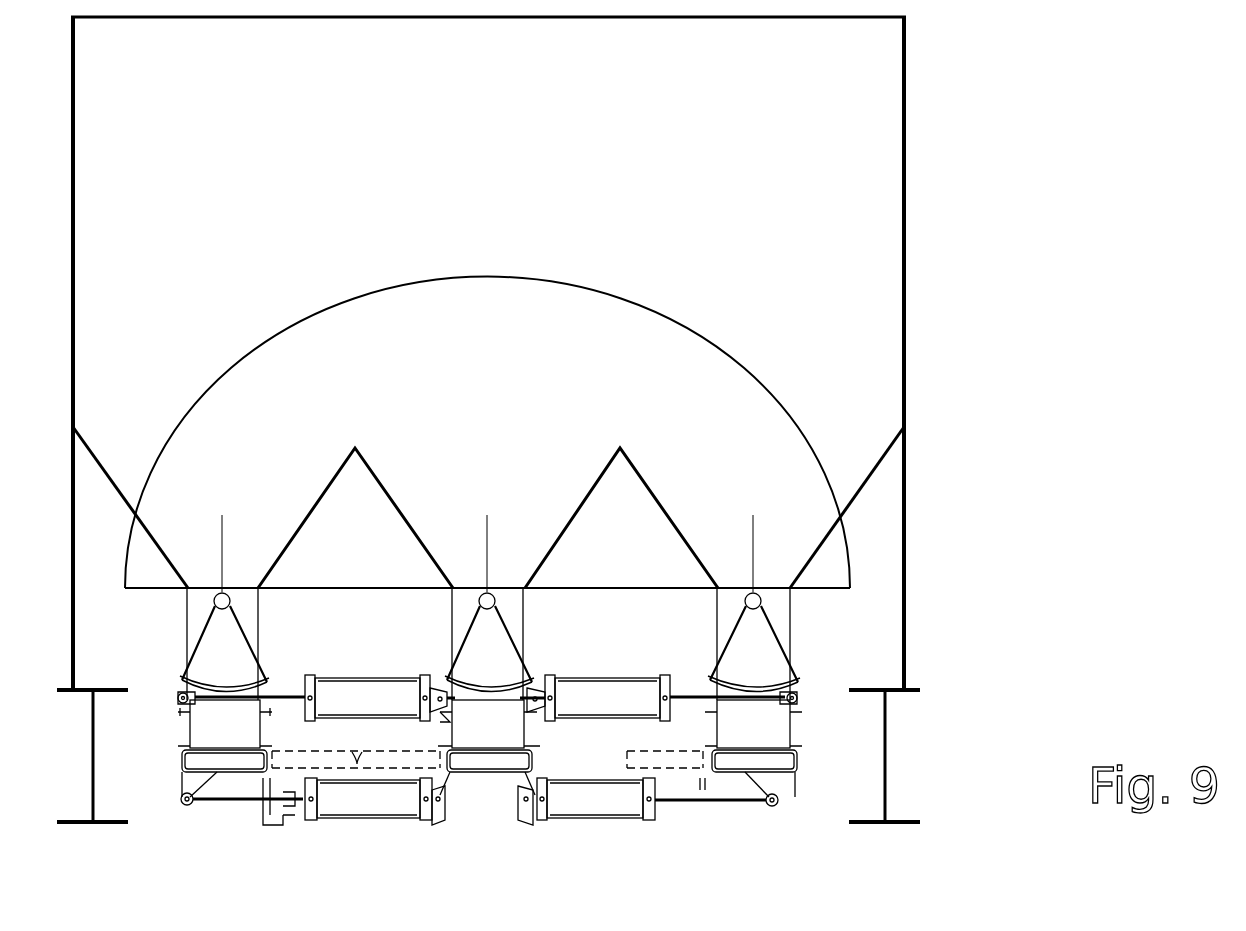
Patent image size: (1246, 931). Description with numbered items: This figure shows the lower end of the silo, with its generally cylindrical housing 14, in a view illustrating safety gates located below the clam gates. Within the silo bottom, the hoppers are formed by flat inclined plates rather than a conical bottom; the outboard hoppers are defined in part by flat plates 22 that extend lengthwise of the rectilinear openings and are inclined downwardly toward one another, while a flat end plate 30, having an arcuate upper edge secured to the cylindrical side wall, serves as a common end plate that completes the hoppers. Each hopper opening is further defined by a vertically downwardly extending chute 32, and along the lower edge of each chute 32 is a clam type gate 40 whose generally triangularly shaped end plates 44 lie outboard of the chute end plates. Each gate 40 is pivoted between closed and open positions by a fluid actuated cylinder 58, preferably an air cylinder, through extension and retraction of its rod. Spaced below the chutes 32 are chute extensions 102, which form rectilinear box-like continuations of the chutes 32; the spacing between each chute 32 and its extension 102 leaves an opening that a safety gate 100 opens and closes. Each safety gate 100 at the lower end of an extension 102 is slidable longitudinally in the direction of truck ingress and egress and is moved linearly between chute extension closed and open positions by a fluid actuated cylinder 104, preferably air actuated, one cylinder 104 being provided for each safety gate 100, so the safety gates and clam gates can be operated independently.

The housing 14 is at (73, 236).
The flat end plate 30 is at (382, 310).
The flat plate 22 is at (335, 483).
The chute 32 is at (263, 618).
The end plate 44 is at (222, 638).
The clam type gate 40 is at (538, 640).
The fluid actuated cylinder 58 is at (375, 702).
The safety gate 100 is at (182, 760).
The chute extension 102 is at (262, 707).
The fluid actuated cylinder 104 is at (353, 815).